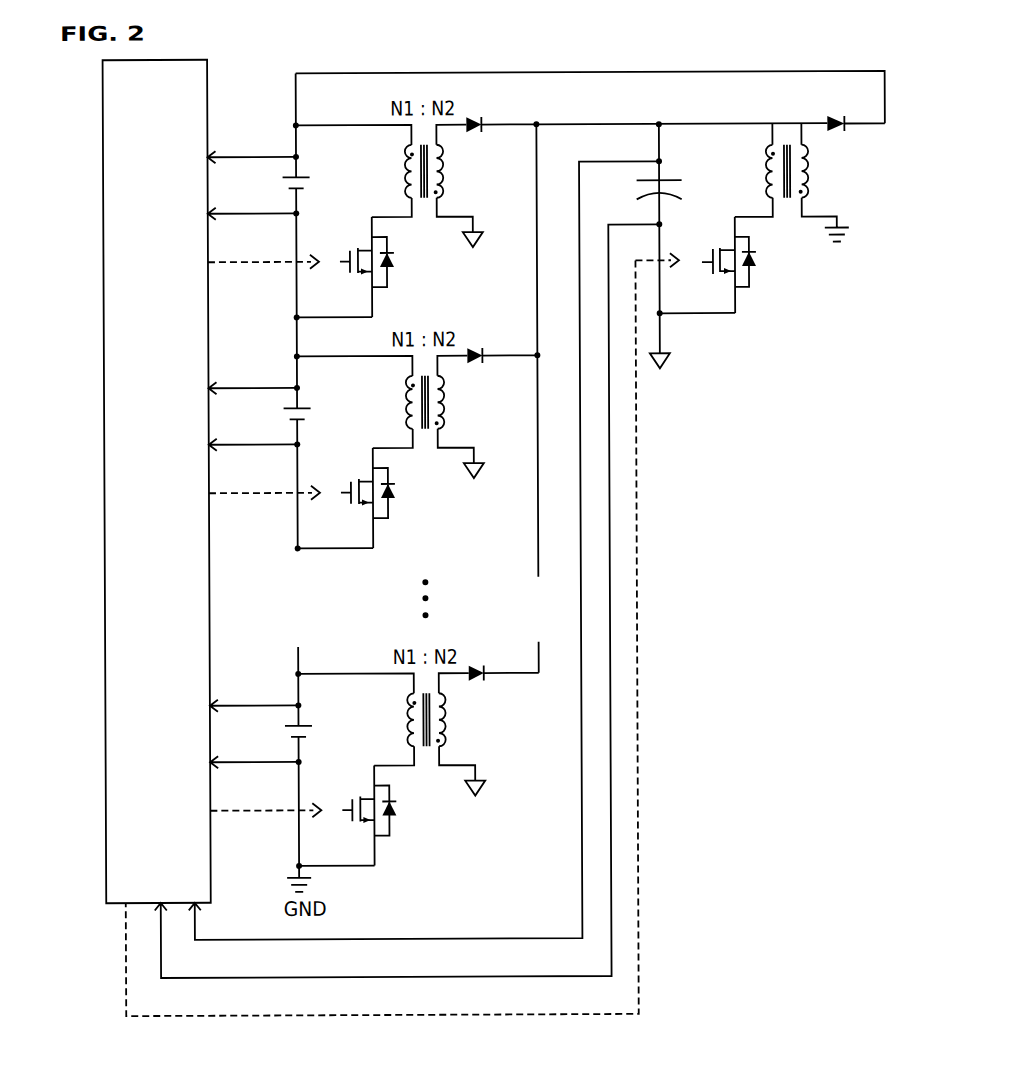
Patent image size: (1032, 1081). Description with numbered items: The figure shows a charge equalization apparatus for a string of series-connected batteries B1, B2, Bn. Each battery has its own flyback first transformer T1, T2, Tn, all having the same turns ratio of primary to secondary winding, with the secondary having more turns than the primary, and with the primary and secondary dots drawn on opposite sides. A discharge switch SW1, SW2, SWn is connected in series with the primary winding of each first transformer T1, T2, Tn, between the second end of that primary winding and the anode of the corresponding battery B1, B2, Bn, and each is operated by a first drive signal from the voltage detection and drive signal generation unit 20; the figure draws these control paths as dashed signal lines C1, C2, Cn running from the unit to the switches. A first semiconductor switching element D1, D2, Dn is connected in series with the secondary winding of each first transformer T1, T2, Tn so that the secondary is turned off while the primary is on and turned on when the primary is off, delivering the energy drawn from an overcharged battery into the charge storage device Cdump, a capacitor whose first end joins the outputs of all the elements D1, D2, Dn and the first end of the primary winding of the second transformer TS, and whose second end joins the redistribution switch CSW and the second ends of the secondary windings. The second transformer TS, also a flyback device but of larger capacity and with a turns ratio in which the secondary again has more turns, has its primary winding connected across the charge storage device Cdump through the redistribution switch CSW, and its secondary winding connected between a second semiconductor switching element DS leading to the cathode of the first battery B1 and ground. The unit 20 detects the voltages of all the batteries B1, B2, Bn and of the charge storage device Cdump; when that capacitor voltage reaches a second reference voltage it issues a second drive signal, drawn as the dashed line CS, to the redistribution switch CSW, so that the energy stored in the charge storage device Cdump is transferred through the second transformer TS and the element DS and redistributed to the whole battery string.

The voltage detection and drive signal generation unit 20 is at (209, 106).
The first battery B1 is at (316, 185).
The second battery B2 is at (317, 416).
The nth battery Bn is at (320, 733).
The first transformer T1 is at (424, 197).
The first transformer T2 is at (425, 428).
The first transformer Tn is at (426, 745).
The discharge switch SW1 is at (392, 267).
The discharge switch SW2 is at (393, 498).
The discharge switch SWn is at (395, 815).
The first semiconductor switching element D1 is at (477, 142).
The first semiconductor switching element D2 is at (478, 373).
The first semiconductor switching element Dn is at (481, 691).
The control signal 1 C1 is at (263, 274).
The control signal 2 C2 is at (264, 505).
The control signal n Cn is at (265, 822).
The charge storage device Cdump is at (695, 188).
The control signal for dump switch CS is at (662, 271).
The redistribution switch CSW is at (757, 265).
The second transformer TS is at (813, 175).
The second semiconductor switching element DS is at (844, 140).